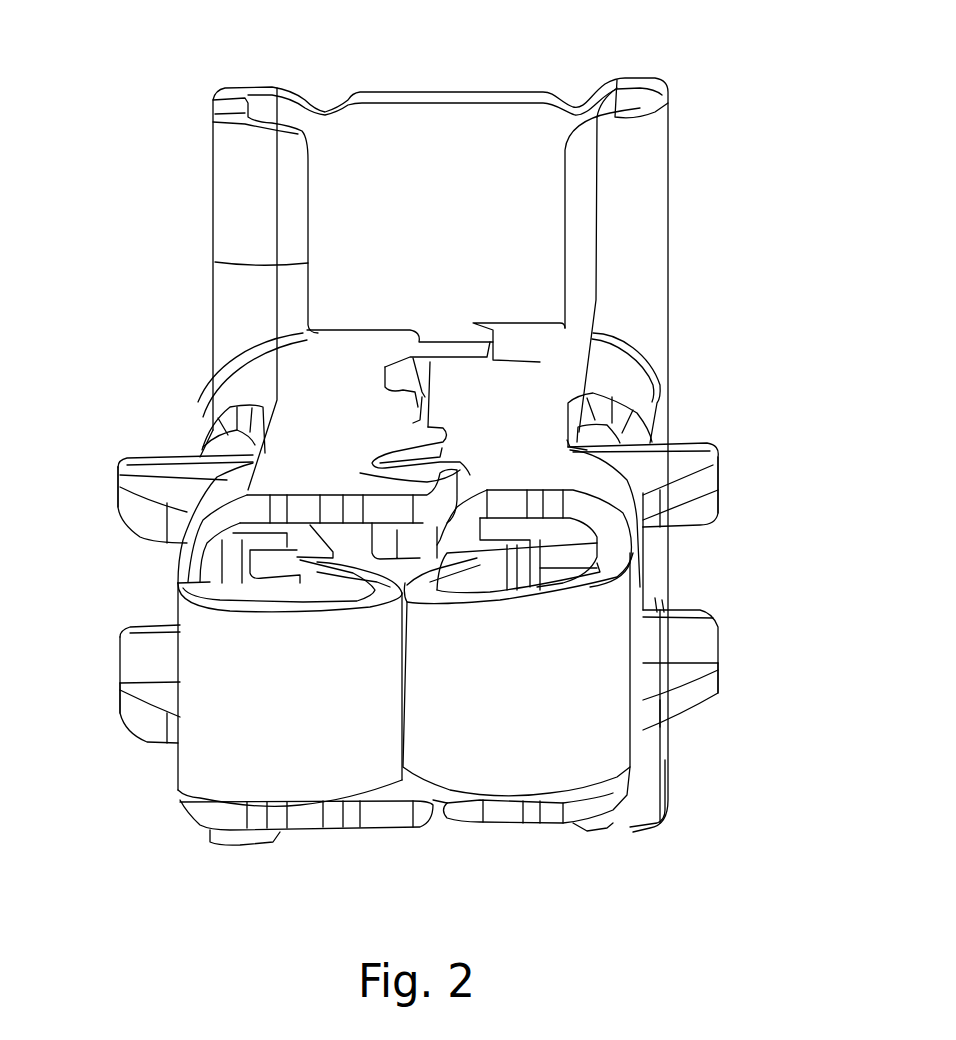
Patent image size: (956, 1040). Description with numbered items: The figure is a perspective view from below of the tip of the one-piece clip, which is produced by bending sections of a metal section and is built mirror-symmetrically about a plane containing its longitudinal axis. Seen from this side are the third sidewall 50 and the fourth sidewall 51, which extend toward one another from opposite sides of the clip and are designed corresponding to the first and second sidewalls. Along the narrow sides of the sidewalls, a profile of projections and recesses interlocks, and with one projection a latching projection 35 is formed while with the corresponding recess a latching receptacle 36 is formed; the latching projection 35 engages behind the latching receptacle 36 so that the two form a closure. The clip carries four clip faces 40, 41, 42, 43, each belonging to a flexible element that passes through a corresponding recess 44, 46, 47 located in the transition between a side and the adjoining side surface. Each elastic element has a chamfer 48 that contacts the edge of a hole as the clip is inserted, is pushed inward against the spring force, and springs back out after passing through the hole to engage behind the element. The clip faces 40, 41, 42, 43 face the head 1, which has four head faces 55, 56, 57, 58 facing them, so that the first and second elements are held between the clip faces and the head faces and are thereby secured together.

The head 1 is at (483, 88).
The latching projection 35 is at (403, 487).
The latching receptacle 36 is at (400, 457).
The clip face 40 is at (126, 450).
The clip face 41 is at (124, 629).
The clip face 42 is at (722, 445).
The clip face 43 is at (722, 620).
The recess 44 is at (220, 453).
The recess 46 is at (617, 410).
The recess 47 is at (665, 603).
The chamfer 48 is at (713, 475).
The third sidewall 50 is at (313, 827).
The fourth sidewall 51 is at (512, 827).
The head face 55 is at (293, 222).
The head face 56 is at (588, 188).
The head face 57 is at (280, 842).
The head face 58 is at (603, 832).